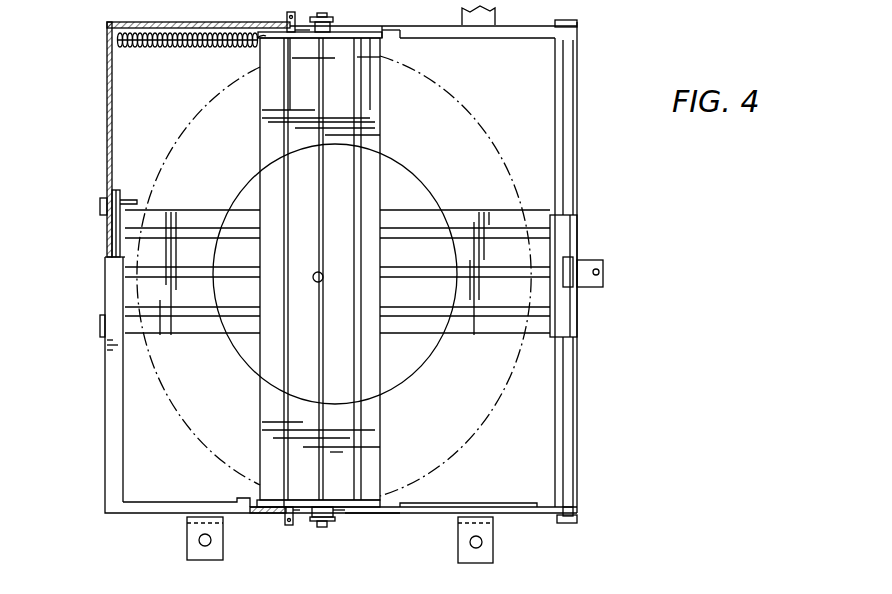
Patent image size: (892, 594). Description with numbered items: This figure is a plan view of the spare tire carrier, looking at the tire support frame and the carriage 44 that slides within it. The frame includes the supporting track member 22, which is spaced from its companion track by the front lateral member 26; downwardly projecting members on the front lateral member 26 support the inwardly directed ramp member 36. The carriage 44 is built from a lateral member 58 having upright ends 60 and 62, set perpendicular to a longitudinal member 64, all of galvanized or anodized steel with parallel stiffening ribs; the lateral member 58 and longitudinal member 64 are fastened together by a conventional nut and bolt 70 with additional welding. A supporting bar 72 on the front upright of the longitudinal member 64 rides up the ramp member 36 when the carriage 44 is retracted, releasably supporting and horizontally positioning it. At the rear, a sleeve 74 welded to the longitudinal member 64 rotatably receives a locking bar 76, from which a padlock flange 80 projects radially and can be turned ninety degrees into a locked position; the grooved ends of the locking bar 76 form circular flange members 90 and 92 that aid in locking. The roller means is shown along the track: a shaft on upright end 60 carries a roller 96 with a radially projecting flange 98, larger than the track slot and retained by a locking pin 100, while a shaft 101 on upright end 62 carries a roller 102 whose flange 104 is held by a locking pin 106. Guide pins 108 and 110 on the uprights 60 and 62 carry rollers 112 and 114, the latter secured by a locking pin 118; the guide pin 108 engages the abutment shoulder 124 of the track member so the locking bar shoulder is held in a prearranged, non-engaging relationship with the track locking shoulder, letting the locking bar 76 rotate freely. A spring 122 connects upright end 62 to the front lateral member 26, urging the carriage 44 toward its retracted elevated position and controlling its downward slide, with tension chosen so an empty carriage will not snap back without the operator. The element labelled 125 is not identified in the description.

The supporting track member 22 is at (155, 515).
The front lateral member 26 is at (107, 122).
The ramp member 36 is at (135, 200).
The carriage 44 is at (393, 202).
The lateral member 58 is at (373, 420).
The upright end 60 is at (380, 496).
The upright end 62 is at (360, 75).
The longitudinal member 64 is at (193, 323).
The nut and bolt 70 is at (315, 281).
The supporting bar 72 is at (112, 230).
The sleeve 74 is at (572, 328).
The locking bar 76 is at (567, 268).
The padlock flange 80 is at (605, 265).
The circular flange member 90 is at (565, 523).
The circular flange member 92 is at (578, 23).
The roller 96 is at (372, 517).
The radially projecting flange 98 is at (342, 520).
The locking pin 100 is at (322, 527).
The shaft 101 is at (330, 17).
The roller 102 is at (365, 100).
The radially projecting flange 104 is at (385, 40).
The locking pin 106 is at (455, 13).
The guide pin 108 is at (292, 525).
The guide pin 110 is at (300, 27).
The roller 112 is at (287, 512).
The roller 114 is at (290, 40).
The locking pin 118 is at (287, 18).
The spring 122 is at (120, 45).
The abutment shoulder 124 is at (287, 504).
The spring end 125 is at (265, 37).